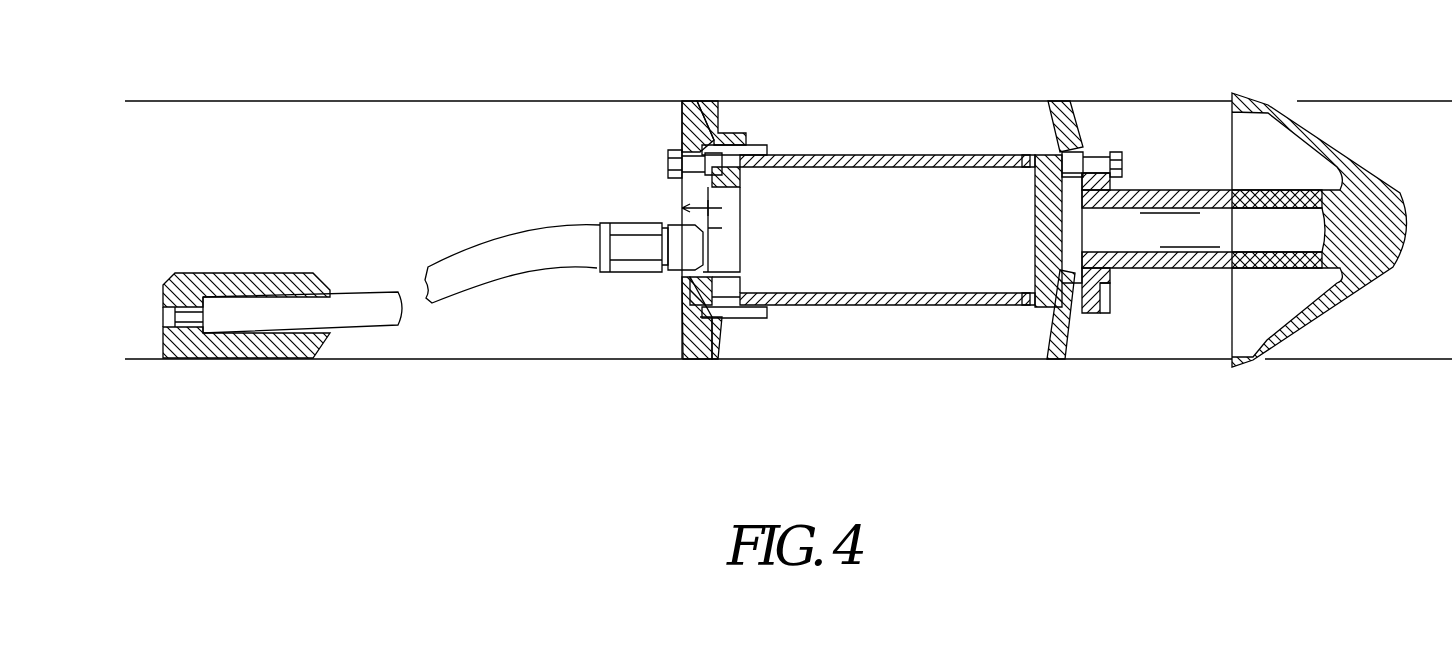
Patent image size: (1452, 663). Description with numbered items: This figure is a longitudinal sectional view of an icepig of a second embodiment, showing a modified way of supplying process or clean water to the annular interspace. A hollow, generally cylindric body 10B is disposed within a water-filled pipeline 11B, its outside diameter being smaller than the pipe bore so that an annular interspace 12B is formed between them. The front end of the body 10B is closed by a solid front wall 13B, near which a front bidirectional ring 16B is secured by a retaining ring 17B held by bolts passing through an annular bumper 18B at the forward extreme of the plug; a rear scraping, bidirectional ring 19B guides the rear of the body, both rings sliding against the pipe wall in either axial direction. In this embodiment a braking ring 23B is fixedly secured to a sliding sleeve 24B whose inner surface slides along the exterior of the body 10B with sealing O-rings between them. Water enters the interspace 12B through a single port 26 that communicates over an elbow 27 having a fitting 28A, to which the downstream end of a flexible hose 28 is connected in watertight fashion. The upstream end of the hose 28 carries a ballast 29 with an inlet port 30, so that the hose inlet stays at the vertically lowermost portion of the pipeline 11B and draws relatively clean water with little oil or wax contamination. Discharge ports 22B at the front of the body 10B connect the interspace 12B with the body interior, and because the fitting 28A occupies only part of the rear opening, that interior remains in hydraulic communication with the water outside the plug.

The body 10B is at (882, 170).
The pipeline 11B is at (880, 101).
The annular interspace 12B is at (887, 232).
The front wall 13B is at (1040, 240).
The front bidirectional ring 16B is at (1063, 125).
The retaining ring 17B is at (1085, 140).
The annular bumper 18B is at (1345, 290).
The rear scraping bidirectional ring 19B is at (697, 101).
The discharge ports 22B is at (1024, 168).
The braking ring 23B is at (720, 105).
The sliding sleeve 24B is at (765, 312).
The port 26 is at (722, 292).
The elbow 27 is at (735, 238).
The flexible hose 28 is at (365, 300).
The fitting 28A is at (680, 225).
The ballast 29 is at (245, 277).
The inlet port 30 is at (205, 322).